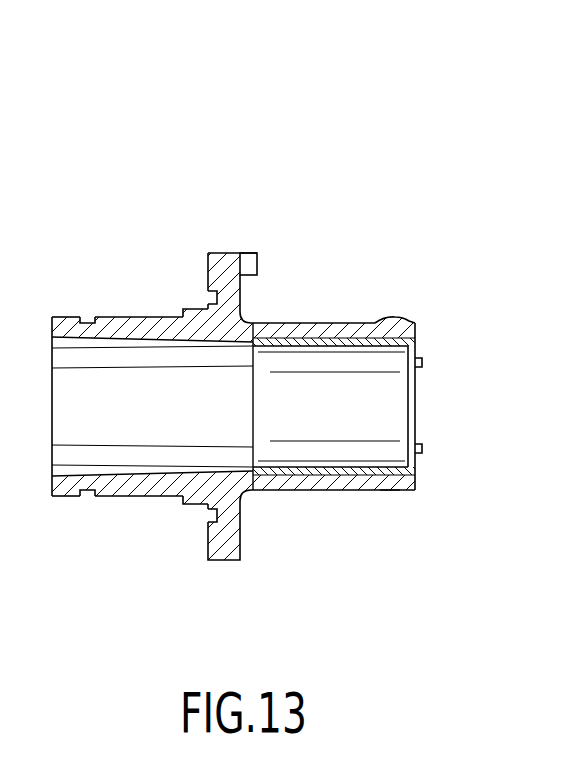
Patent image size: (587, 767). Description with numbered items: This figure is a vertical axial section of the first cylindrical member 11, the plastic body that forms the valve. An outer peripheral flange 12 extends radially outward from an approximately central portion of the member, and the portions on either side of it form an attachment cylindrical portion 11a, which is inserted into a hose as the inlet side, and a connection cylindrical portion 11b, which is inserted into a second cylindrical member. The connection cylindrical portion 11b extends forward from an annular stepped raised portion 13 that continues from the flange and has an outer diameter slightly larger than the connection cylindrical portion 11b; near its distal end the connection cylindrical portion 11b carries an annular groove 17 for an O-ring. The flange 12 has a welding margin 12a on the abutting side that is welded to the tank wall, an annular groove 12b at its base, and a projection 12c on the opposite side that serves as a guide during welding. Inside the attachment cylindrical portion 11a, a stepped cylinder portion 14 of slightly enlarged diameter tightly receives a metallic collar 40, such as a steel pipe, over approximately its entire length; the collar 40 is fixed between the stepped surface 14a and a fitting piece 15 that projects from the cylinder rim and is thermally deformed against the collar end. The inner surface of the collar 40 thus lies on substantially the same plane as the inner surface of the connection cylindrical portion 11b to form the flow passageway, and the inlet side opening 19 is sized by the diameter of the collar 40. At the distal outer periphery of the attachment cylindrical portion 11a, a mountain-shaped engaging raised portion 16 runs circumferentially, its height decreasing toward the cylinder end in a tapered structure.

The first cylindrical member 11 is at (343, 175).
The attachment cylindrical portion 11a is at (337, 493).
The connection cylindrical portion 11b is at (147, 498).
The outer peripheral flange 12 is at (223, 253).
The welding margin 12a is at (208, 257).
The annular groove 12b is at (207, 296).
The projection 12c is at (256, 254).
The stepped raised portion 13 is at (185, 312).
The stepped cylinder portion 14 is at (338, 340).
The stepped surface 14a is at (262, 323).
The fitting piece 15 is at (423, 363).
The engaging raised portion 16 is at (393, 318).
The annular groove 17 is at (87, 497).
The inlet side opening 19 is at (418, 405).
The metallic collar 40 is at (397, 468).